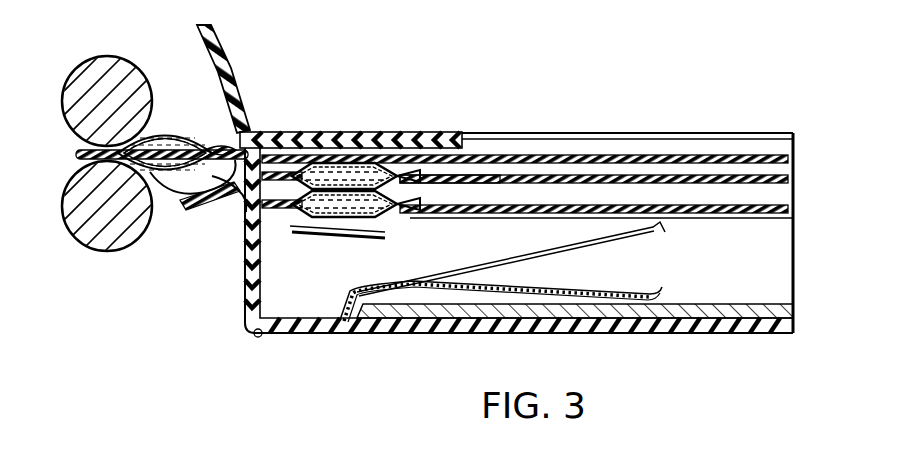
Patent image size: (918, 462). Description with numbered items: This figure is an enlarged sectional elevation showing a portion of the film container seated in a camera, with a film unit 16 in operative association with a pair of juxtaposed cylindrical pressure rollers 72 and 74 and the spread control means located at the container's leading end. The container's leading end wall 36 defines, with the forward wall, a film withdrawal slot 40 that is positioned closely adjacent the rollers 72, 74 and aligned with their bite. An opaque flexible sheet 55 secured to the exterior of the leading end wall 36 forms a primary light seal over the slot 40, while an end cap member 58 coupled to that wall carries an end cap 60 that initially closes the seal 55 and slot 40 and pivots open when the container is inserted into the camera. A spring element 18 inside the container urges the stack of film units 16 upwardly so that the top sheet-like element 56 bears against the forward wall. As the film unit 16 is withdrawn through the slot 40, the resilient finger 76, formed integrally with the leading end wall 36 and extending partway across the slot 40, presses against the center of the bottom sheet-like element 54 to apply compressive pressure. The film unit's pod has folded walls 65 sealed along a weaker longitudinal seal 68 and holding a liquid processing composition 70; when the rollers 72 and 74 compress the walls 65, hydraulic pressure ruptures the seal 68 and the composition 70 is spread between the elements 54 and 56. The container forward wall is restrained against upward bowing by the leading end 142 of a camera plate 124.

The film unit 16 is at (500, 188).
The spring element 18 is at (508, 252).
The leading end wall 36 is at (262, 286).
The withdrawal slot 40 is at (276, 190).
The bottom sheet-like element 54 is at (566, 170).
The opaque flexible sheet 55 is at (236, 198).
The top sheet-like element 56 is at (553, 150).
The end cap member 58 is at (245, 263).
The end cap 60 is at (230, 208).
The walls 65 is at (168, 136).
The longitudinal seal 68 is at (205, 171).
The processing composition 70 is at (188, 146).
The roller 72 is at (127, 70).
The roller 74 is at (121, 246).
The finger 76 is at (276, 134).
The plate 124 is at (343, 108).
The leading end 142 is at (402, 132).